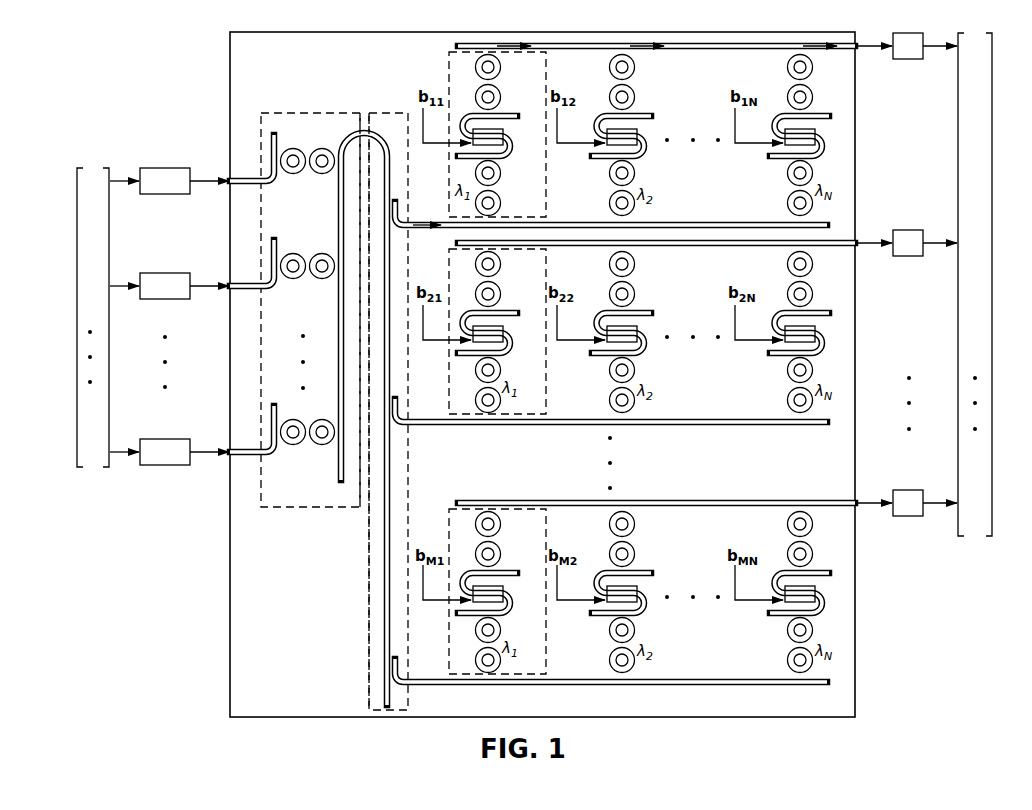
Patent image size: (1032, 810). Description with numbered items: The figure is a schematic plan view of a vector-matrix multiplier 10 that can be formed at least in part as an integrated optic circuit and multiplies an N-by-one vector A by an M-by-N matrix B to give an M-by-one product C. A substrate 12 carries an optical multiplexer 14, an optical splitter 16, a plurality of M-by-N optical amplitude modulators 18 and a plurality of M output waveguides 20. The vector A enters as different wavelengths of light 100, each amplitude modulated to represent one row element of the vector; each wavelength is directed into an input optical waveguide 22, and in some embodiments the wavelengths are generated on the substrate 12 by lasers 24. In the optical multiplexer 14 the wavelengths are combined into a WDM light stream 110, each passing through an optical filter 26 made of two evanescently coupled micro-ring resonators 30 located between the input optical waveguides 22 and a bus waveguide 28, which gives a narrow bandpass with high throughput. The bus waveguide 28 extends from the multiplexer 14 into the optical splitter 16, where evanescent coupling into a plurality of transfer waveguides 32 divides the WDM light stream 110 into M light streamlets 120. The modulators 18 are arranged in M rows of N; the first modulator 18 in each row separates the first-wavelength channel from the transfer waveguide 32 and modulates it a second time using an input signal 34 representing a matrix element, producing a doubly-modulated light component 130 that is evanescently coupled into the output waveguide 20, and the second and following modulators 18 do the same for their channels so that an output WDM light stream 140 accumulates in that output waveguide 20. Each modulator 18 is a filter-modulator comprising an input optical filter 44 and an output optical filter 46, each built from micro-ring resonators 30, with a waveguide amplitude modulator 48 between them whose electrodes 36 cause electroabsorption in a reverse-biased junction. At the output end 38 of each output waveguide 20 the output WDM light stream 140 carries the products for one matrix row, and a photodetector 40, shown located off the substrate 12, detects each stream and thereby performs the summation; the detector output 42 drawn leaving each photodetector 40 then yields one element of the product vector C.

The vector-matrix multiplier 10 is at (195, 673).
The substrate 12 is at (266, 693).
The optical multiplexer 14 is at (300, 508).
The optical splitter 16 is at (368, 569).
The optical amplitude modulator 18 is at (448, 75).
The output waveguide 20 is at (707, 50).
The input optical waveguide 22 is at (250, 177).
The laser 24 is at (175, 190).
The optical filter 26 is at (293, 150).
The bus waveguide 28 is at (337, 218).
The micro-ring resonator 30 is at (318, 173).
The transfer waveguide 32 is at (425, 220).
The input signal 34 is at (428, 144).
The electrode 36 is at (505, 139).
The output end 38 is at (852, 53).
The photodetector 40 is at (918, 55).
The output signal 42 is at (931, 51).
The input optical filter 44 is at (500, 188).
The output optical filter 46 is at (499, 83).
The waveguide amplitude modulator 48 is at (510, 129).
The light 100 is at (204, 177).
The WDM light stream 110 is at (358, 136).
The light streamlet 120 is at (431, 229).
The doubly-modulated light component 130 is at (522, 47).
The output WDM light stream 140 is at (873, 51).